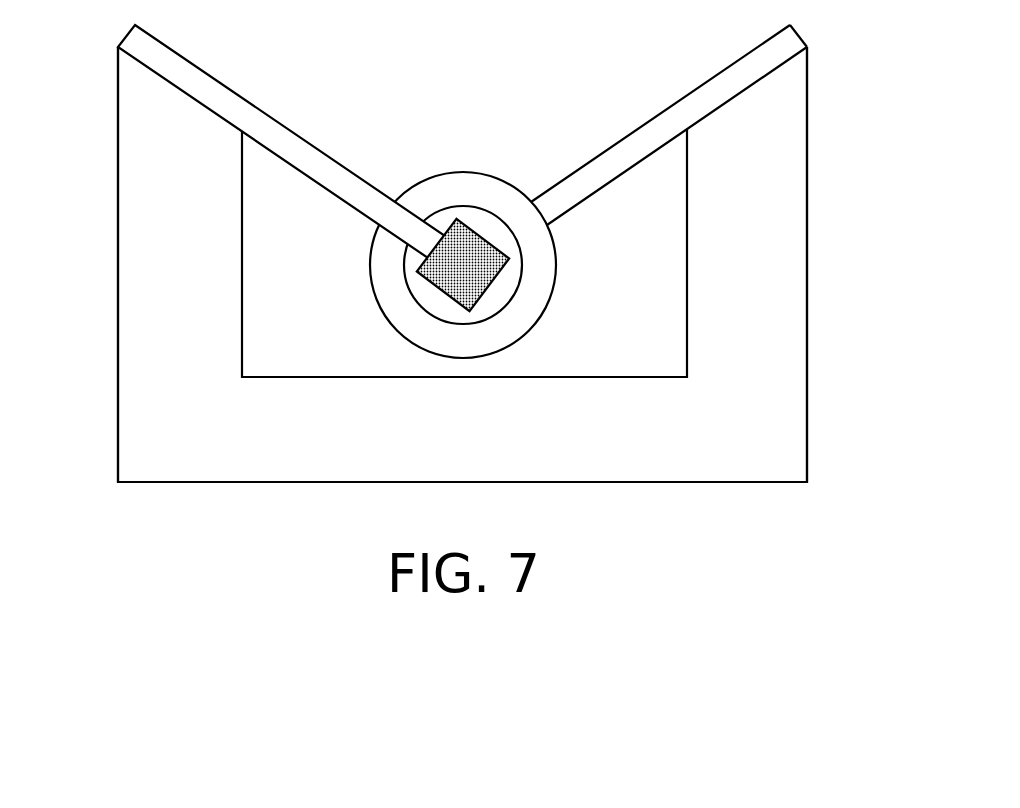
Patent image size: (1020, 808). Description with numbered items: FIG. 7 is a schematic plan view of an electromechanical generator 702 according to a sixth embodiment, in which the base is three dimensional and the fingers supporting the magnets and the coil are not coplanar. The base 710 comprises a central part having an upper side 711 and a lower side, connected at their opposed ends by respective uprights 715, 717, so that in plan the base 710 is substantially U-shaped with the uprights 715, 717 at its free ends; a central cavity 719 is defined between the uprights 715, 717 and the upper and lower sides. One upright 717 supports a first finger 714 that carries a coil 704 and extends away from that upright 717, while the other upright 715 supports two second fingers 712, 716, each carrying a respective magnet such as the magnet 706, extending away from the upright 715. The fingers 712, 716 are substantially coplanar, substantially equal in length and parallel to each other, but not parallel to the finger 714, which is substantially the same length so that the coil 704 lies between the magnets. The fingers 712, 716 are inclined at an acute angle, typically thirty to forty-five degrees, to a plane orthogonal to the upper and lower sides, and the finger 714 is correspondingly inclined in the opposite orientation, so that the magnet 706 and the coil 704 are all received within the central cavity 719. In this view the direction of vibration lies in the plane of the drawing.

The sensor assembly 702 is at (548, 67).
The coil 704 is at (457, 173).
The magnet 706 is at (500, 276).
The base 710 is at (793, 113).
The upper side 711 is at (464, 465).
The second finger 712 is at (295, 150).
The second finger 716 is at (253, 62).
The first finger 714 is at (703, 83).
The upright 715 is at (133, 330).
The upright 717 is at (793, 330).
The central cavity 719 is at (672, 252).